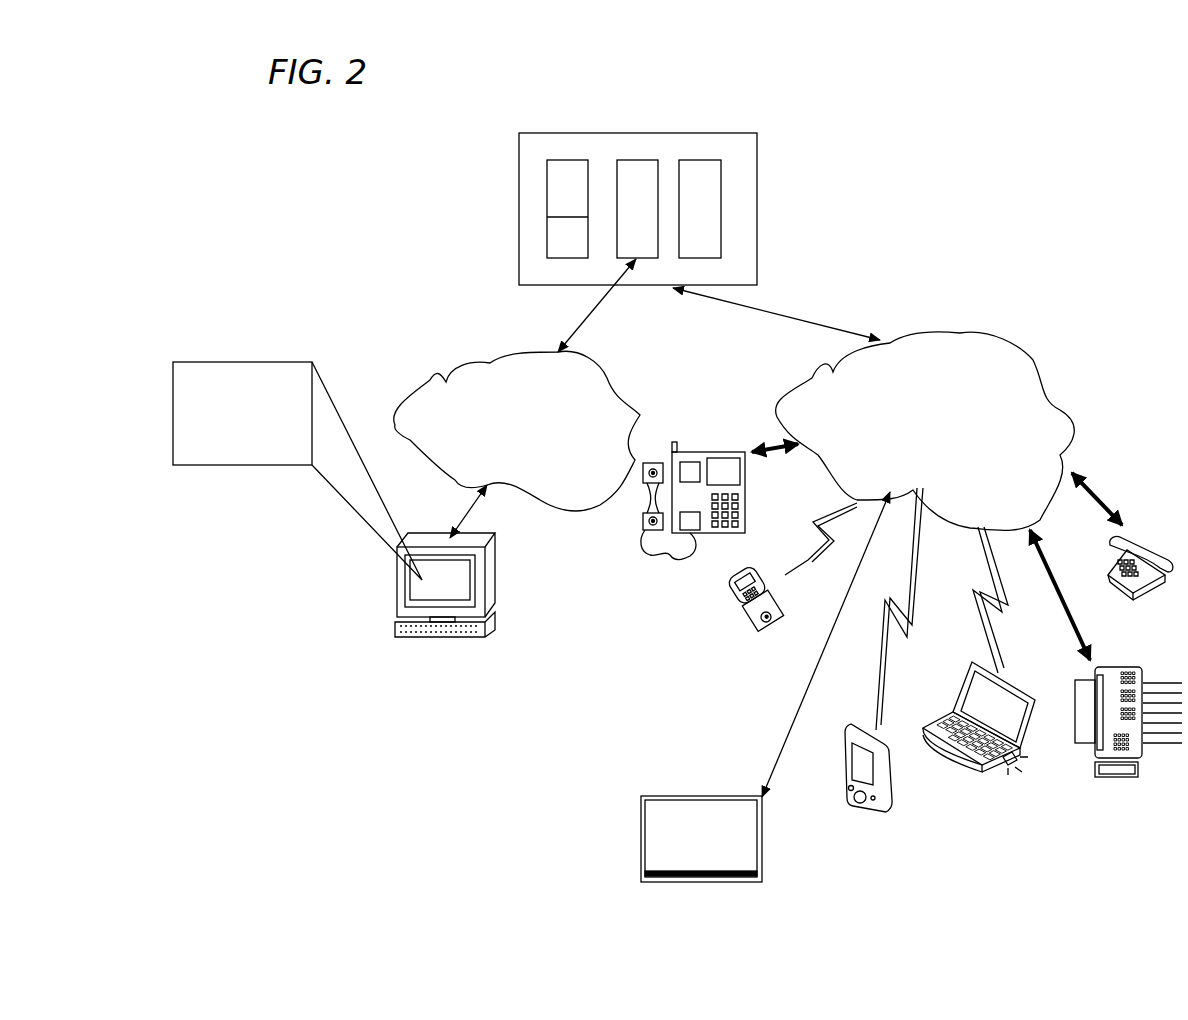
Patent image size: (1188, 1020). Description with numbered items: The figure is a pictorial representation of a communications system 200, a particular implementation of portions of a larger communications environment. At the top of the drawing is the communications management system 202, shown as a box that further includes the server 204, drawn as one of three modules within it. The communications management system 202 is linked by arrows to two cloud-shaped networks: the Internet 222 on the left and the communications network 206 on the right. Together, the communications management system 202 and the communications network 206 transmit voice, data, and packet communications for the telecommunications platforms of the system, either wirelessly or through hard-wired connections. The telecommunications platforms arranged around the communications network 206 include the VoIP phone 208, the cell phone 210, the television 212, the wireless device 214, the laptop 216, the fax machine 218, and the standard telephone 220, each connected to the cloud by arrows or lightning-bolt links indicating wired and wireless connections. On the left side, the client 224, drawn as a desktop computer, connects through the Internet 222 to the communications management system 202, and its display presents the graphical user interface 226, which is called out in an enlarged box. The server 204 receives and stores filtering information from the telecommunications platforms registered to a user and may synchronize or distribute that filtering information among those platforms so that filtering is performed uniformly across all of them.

The communications system 200 is at (199, 173).
The communications management system 202 is at (742, 147).
The server 204 is at (633, 168).
The communications network 206 is at (925, 431).
The VoIP phone 208 is at (684, 512).
The cell phone 210 is at (742, 633).
The television 212 is at (653, 858).
The wireless device 214 is at (853, 803).
The laptop 216 is at (973, 763).
The fax machine 218 is at (1115, 768).
The standard telephone 220 is at (1141, 596).
The Internet 222 is at (517, 431).
The client 224 is at (393, 622).
The graphical user interface 226 is at (297, 471).